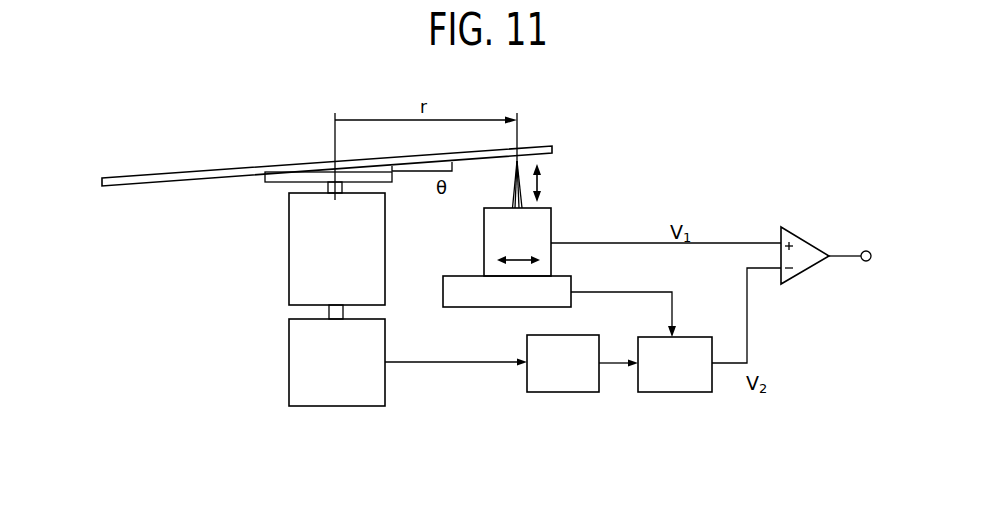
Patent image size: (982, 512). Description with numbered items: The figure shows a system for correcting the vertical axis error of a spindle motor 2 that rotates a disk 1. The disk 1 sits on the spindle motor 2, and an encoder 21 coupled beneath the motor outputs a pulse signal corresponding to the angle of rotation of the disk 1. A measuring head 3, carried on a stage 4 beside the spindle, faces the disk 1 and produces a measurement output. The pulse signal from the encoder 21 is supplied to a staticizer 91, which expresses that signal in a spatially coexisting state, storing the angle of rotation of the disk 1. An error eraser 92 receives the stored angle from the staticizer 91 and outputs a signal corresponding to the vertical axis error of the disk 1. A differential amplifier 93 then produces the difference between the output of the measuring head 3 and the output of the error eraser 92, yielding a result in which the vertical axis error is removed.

The disk 1 is at (546, 154).
The spindle motor 2 is at (289, 280).
The encoder 21 is at (289, 365).
The measuring head 3 is at (551, 222).
The moving stage 4 is at (453, 276).
The staticizer 91 is at (557, 392).
The error eraser 92 is at (673, 392).
The differential amplifier 93 is at (803, 272).